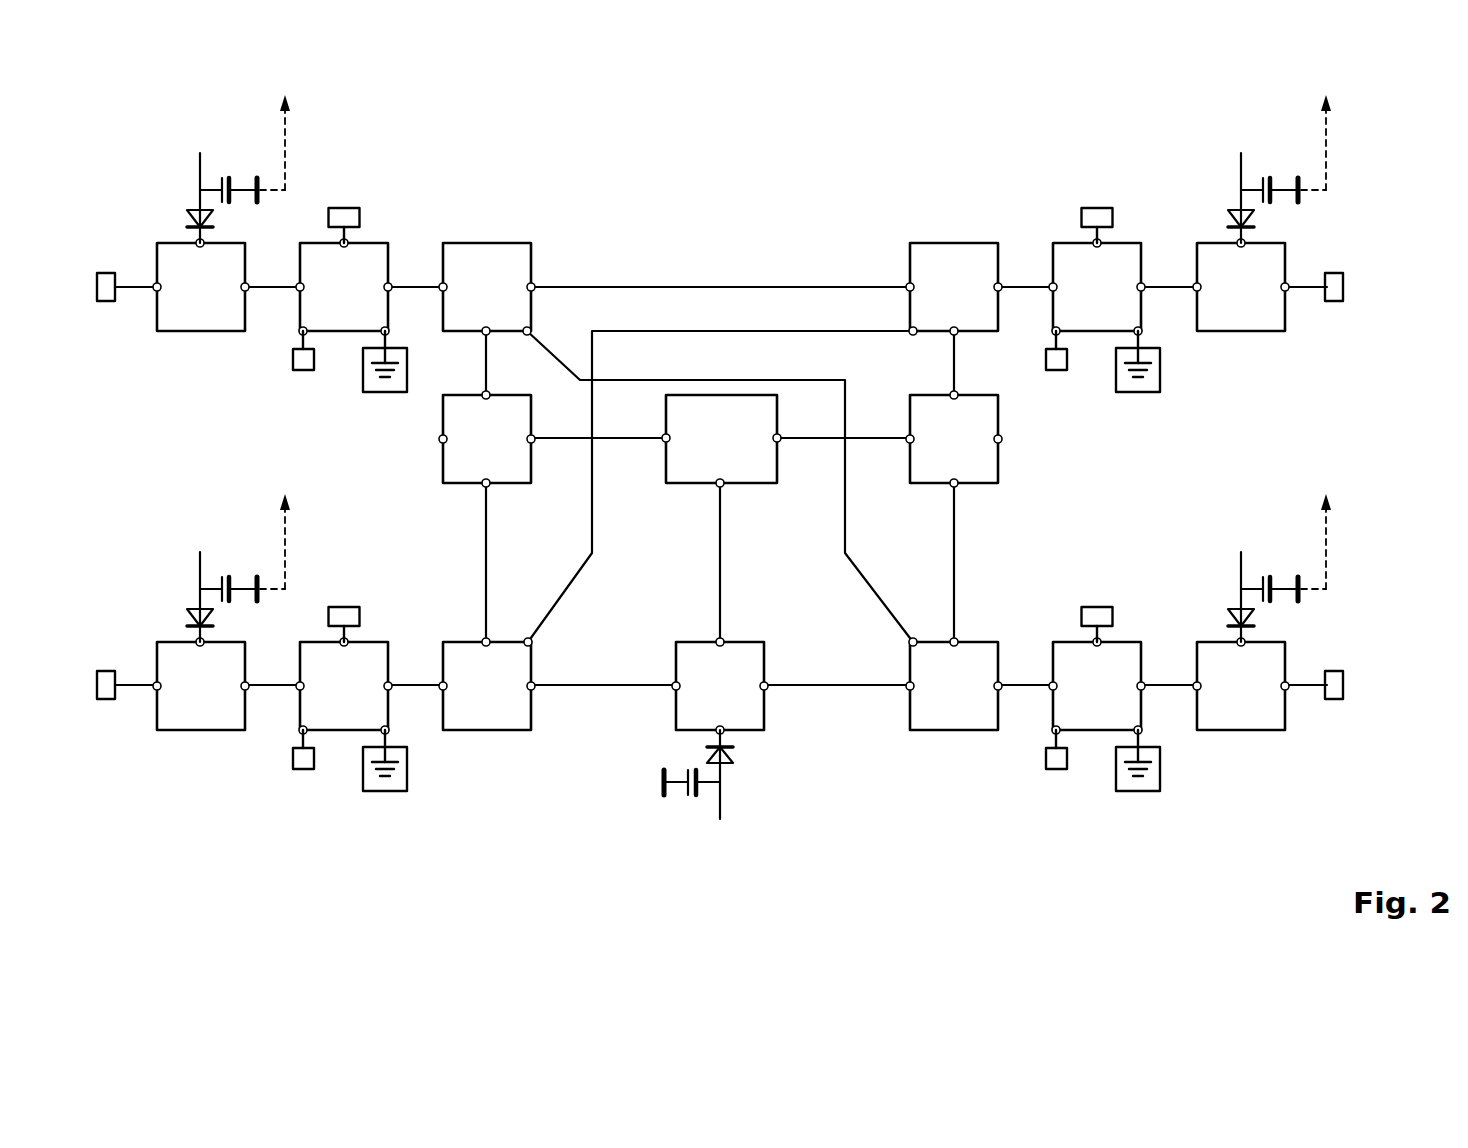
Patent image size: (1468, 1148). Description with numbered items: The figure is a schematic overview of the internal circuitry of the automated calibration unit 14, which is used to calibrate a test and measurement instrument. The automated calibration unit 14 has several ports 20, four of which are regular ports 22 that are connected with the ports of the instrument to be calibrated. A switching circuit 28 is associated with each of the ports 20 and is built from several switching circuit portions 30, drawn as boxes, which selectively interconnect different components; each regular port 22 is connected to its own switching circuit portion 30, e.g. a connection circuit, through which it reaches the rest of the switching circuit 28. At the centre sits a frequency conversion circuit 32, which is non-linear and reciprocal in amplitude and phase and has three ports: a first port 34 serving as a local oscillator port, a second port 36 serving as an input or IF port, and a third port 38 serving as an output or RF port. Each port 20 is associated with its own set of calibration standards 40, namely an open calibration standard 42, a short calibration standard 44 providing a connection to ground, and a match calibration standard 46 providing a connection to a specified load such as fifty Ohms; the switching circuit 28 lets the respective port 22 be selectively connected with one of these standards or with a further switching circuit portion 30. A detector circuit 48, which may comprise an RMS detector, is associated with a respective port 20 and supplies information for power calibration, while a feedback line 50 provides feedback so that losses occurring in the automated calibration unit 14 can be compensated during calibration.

The automated calibration unit 14 is at (689, 166).
The port 20 is at (103, 272).
The regular port 22 is at (104, 302).
The switching circuit 28 is at (544, 160).
The switching circuit portion 30 is at (178, 332).
The frequency conversion circuit 32 is at (740, 483).
The first port 34 is at (718, 482).
The second port 36 is at (667, 437).
The third port 38 is at (777, 438).
The calibration standard 40 is at (351, 207).
The open calibration standard 42 is at (305, 371).
The short calibration standard 44 is at (373, 393).
The match calibration standard 46 is at (336, 207).
The detector circuit 48 is at (170, 168).
The feedback line 50 is at (283, 128).